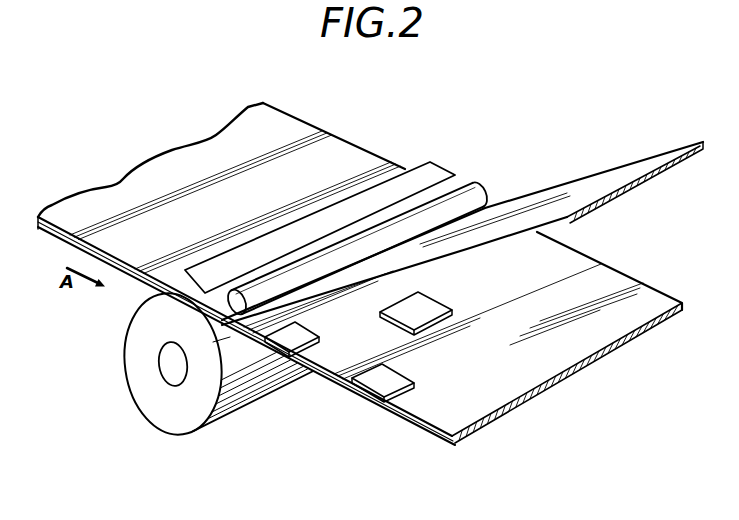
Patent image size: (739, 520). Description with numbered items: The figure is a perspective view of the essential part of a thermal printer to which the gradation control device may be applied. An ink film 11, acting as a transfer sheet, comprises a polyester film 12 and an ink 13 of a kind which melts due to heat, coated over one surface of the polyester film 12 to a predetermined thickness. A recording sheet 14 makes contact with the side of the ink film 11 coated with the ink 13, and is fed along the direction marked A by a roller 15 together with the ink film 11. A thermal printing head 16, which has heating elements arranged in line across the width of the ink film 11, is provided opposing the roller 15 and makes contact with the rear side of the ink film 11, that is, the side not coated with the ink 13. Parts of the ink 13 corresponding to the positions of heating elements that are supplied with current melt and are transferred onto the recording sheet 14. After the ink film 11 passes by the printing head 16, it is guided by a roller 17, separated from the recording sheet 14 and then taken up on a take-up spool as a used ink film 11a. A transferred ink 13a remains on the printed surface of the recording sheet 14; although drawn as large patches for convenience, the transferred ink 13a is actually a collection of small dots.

The ink film 11 is at (306, 117).
The used ink film 11a is at (542, 182).
The polyester film 12 is at (123, 181).
The ink 13 is at (609, 206).
The transferred ink 13a is at (290, 335).
The recording sheet 14 is at (137, 283).
The roller 15 is at (158, 386).
The thermal printing head 16 is at (418, 155).
The roller 17 is at (459, 183).